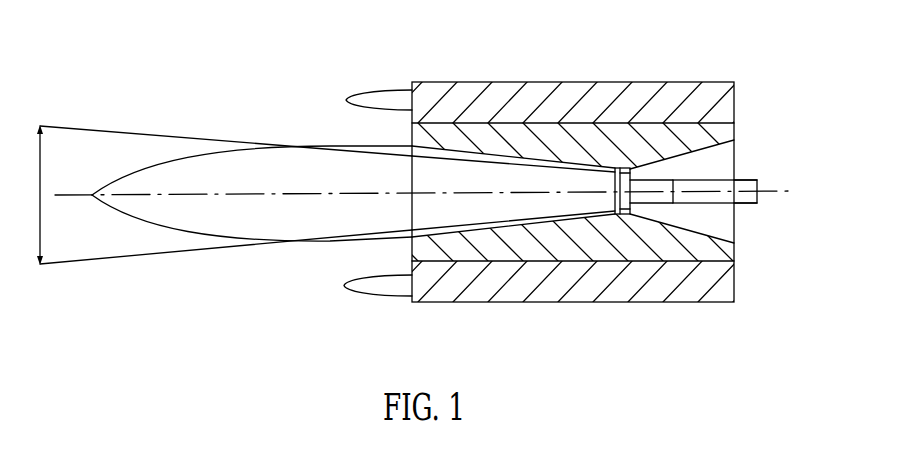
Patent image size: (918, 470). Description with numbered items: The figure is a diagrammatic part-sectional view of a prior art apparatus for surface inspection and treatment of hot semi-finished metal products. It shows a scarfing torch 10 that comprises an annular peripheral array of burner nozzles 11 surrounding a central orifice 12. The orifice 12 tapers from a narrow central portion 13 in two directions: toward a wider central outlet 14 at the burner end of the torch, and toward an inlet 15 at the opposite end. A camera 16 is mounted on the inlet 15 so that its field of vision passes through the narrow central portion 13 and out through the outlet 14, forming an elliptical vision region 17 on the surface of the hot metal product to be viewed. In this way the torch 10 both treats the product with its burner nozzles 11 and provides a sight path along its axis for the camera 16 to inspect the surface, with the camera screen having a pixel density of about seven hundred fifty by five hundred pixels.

The scarfing torch 10 is at (670, 66).
The burner nozzles 11 is at (390, 97).
The central orifice 12 is at (433, 182).
The narrow central portion 13 is at (622, 170).
The central outlet 14 is at (407, 210).
The inlet 15 is at (737, 163).
The camera 16 is at (744, 198).
The elliptical vision region 17 is at (41, 268).